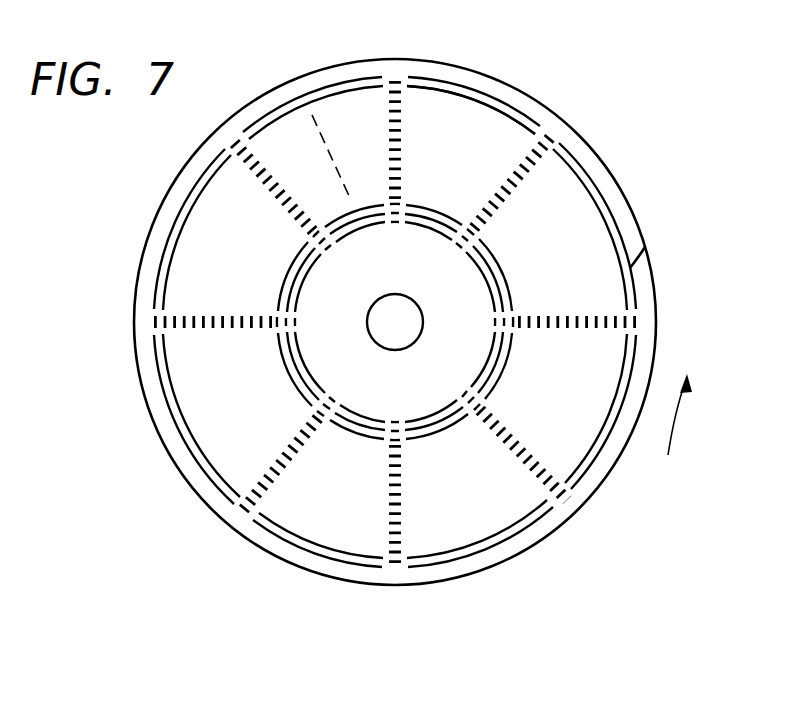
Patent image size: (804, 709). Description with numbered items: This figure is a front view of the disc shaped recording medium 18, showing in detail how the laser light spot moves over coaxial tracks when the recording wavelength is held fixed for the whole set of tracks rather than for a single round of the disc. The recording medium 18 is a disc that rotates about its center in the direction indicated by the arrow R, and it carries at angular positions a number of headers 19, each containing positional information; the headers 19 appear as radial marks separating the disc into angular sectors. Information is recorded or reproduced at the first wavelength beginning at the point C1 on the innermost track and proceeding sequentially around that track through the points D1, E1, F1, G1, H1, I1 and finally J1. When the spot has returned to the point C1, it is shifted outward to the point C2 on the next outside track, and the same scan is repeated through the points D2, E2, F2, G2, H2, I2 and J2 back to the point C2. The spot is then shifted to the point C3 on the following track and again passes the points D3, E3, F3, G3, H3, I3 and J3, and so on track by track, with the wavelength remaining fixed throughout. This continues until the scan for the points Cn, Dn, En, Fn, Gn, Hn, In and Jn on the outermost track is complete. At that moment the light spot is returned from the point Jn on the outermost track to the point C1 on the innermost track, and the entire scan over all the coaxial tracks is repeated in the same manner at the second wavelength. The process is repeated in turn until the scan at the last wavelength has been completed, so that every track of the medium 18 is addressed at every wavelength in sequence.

The disc shaped recording medium 18 is at (645, 247).
The header 19 is at (527, 167).
The rotation direction arrow R is at (682, 414).
The point Cn on outermost track Cn is at (393, 63).
The point Dn on outermost track Dn is at (556, 130).
The point En on outermost track En is at (633, 314).
The point Fn on outermost track Fn is at (568, 494).
The point Gn on outermost track Gn is at (396, 566).
The point Hn on outermost track Hn is at (242, 512).
The point In on outermost track In is at (155, 333).
The point Jn on outermost track Jn is at (222, 150).
The point C1 on innermost track C1 is at (392, 224).
The point C2 on next outside track C2 is at (392, 211).
The point C3 on third track C3 is at (387, 203).
The point D1 on innermost track D1 is at (458, 246).
The point D2 on next outside track D2 is at (464, 238).
The point D3 on third track D3 is at (470, 230).
The point E1 on innermost track E1 is at (494, 322).
The point E2 on next outside track E2 is at (505, 321).
The point E3 on third track E3 is at (514, 320).
The point F1 on innermost track F1 is at (465, 393).
The point F2 on next outside track F2 is at (472, 399).
The point F3 on third track F3 is at (478, 407).
The point G1 on innermost track G1 is at (397, 422).
The point G2 on next outside track G2 is at (402, 432).
The point G3 on third track G3 is at (402, 442).
The point H1 on innermost track H1 is at (333, 400).
The point H2 on next outside track H2 is at (328, 408).
The point H3 on third track H3 is at (321, 415).
The point I1 on innermost track I1 is at (294, 324).
The point I2 on next outside track I2 is at (286, 330).
The point I3 on third track I3 is at (277, 330).
The point J1 on innermost track J1 is at (328, 250).
The point J2 on next outside track J2 is at (321, 242).
The point J3 on third track J3 is at (315, 235).